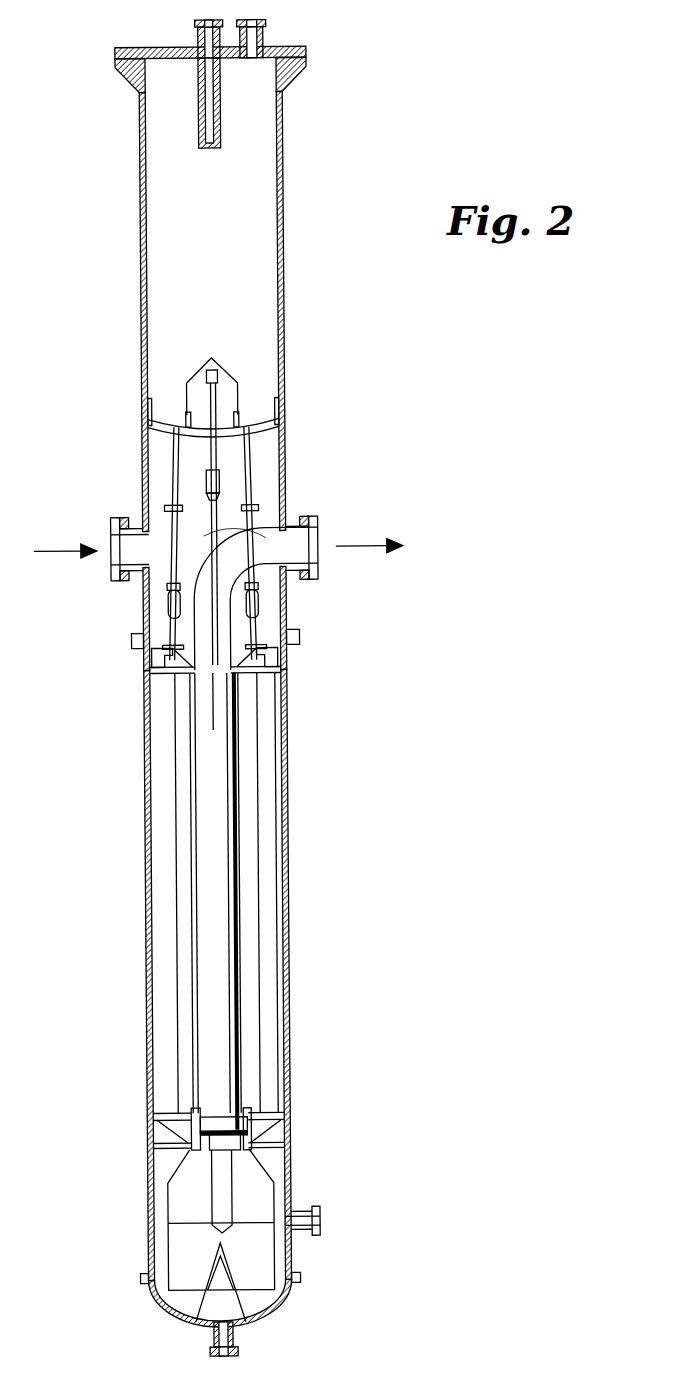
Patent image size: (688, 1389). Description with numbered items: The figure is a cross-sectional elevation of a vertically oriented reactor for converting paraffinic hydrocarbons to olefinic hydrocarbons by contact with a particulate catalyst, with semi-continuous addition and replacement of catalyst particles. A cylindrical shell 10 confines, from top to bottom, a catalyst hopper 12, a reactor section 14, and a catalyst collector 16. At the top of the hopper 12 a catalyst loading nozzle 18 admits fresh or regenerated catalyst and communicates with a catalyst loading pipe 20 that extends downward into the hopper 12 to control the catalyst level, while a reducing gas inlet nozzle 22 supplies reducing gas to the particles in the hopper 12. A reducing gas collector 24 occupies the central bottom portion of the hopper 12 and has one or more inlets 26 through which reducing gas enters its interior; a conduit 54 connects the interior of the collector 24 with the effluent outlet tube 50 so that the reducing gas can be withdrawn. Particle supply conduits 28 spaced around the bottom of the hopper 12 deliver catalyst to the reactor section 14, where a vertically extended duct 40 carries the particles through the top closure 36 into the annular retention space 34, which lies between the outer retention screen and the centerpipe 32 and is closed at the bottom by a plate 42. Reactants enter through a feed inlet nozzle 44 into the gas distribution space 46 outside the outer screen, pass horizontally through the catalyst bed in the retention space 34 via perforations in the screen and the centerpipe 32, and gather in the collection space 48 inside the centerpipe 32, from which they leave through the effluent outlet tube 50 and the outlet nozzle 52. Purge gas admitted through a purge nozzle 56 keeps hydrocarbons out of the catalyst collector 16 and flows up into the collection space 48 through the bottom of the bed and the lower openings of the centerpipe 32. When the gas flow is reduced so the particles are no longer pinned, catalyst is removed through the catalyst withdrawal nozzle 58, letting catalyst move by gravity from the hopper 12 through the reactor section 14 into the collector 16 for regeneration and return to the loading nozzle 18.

The cylindrical shell 10 is at (296, 740).
The catalyst hopper 12 is at (264, 217).
The reactor section 14 is at (270, 968).
The catalyst collector 16 is at (258, 1193).
The catalyst loading nozzle 18 is at (203, 40).
The catalyst loading pipe 20 is at (227, 133).
The reducing gas inlet nozzle 22 is at (270, 30).
The reducing gas collector 24 is at (235, 363).
The inlets 26 is at (241, 418).
The particle supply conduits 28 is at (275, 497).
The centerpipe 32 is at (237, 788).
The annular retention space 34 is at (246, 848).
The top closure 36 is at (143, 653).
The duct 40 is at (283, 628).
The plate 42 is at (250, 1110).
The feed inlet nozzle 44 is at (128, 578).
The gas distribution space 46 is at (160, 774).
The collection space 48 is at (203, 820).
The effluent outlet tube 50 is at (232, 530).
The outlet nozzle 52 is at (314, 522).
The conduit 54 is at (215, 447).
The purge nozzle 56 is at (296, 1208).
The catalyst withdrawal nozzle 58 is at (231, 1337).